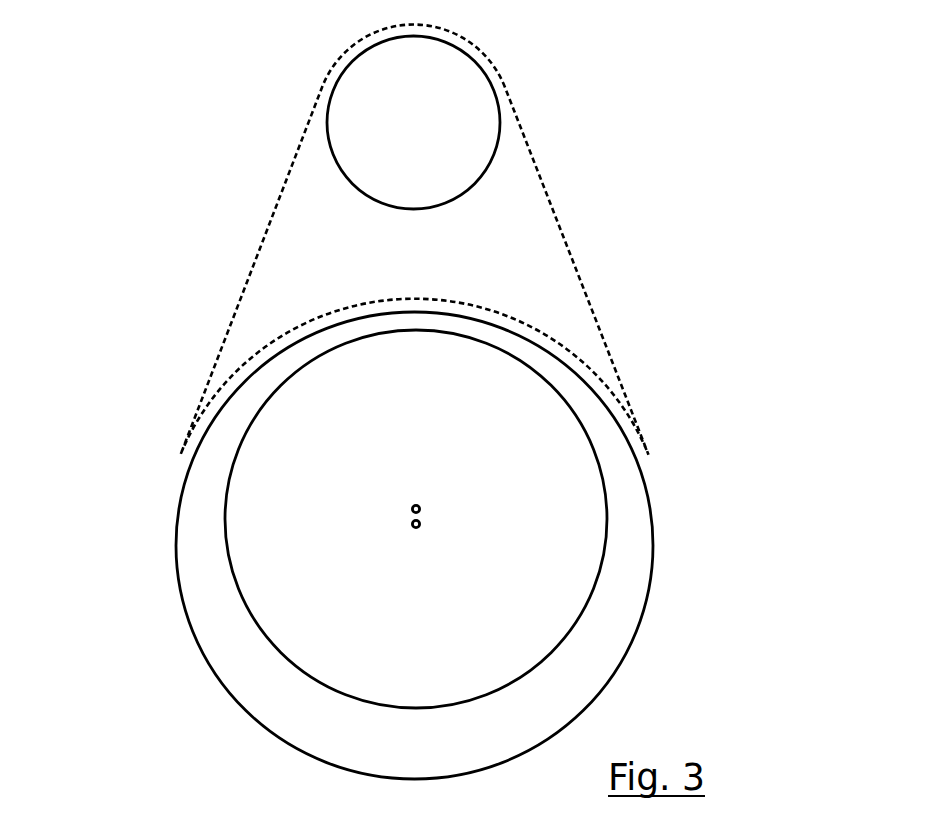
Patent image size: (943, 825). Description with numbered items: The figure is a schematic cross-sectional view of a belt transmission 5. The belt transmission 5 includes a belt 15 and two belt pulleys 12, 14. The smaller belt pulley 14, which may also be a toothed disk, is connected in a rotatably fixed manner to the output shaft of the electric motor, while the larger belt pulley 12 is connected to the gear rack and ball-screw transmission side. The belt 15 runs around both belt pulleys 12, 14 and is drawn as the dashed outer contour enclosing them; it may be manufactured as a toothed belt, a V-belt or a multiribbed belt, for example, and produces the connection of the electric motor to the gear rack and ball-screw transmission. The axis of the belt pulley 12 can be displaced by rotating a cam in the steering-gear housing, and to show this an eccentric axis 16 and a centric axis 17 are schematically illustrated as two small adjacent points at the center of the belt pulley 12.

The belt transmission 5 is at (241, 210).
The belt pulley 12 is at (645, 480).
The belt pulley 14 is at (488, 80).
The belt 15 is at (565, 240).
The eccentric axis 16 is at (386, 491).
The centric axis 17 is at (388, 533).